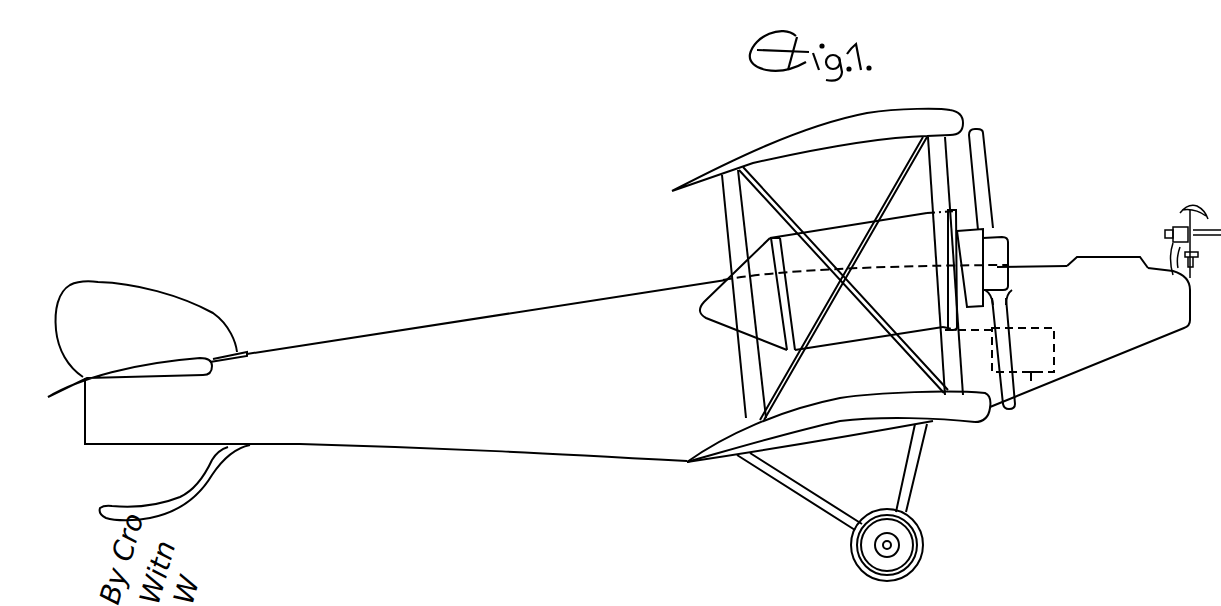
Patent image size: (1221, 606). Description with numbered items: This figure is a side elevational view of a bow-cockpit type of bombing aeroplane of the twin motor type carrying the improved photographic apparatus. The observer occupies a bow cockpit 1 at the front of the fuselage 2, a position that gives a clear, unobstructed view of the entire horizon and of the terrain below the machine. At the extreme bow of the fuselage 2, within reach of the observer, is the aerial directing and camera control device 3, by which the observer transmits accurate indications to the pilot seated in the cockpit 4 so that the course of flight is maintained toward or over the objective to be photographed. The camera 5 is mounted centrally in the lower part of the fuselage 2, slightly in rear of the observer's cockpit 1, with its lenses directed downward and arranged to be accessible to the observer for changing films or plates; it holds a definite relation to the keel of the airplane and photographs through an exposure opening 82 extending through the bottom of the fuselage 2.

The bow cockpit 1 is at (1103, 265).
The fuselage 2 is at (1113, 340).
The aerial directing and camera control device 3 is at (1193, 208).
The cockpit 4 is at (838, 272).
The camera 5 is at (1044, 346).
The exposure opening 82 is at (1027, 382).